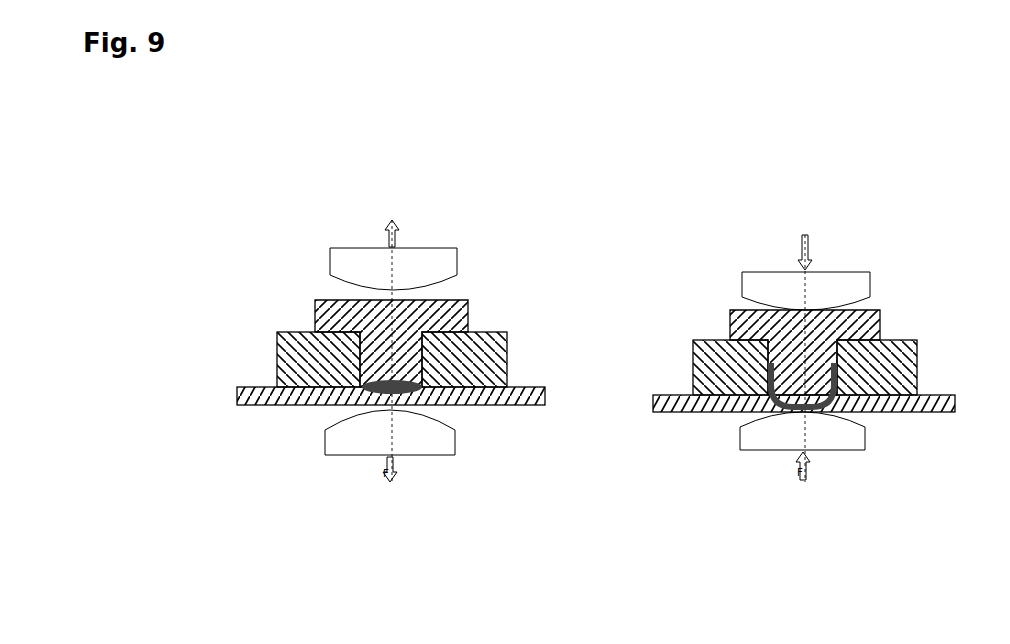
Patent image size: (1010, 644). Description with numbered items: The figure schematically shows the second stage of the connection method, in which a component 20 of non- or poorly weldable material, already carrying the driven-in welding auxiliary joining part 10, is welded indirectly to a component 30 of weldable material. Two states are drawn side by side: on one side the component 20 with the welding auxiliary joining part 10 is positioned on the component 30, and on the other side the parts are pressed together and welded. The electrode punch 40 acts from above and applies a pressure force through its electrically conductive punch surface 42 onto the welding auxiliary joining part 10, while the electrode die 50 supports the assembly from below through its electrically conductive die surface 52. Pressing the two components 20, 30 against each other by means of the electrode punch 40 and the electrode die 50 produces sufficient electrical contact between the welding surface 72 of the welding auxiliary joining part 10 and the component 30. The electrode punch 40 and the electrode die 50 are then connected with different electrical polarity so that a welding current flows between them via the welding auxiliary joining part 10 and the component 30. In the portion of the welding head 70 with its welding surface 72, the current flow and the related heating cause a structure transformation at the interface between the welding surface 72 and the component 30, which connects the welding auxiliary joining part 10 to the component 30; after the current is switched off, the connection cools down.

The welding auxiliary joining part 10 is at (730, 320).
The component 20 is at (653, 402).
The component 30 is at (655, 412).
The electrode punch 40 is at (758, 267).
The punch surface 42 is at (748, 305).
The electrode die 50 is at (772, 430).
The die surface 52 is at (968, 452).
The welding head 70 is at (773, 392).
The welding surface 72 is at (750, 416).